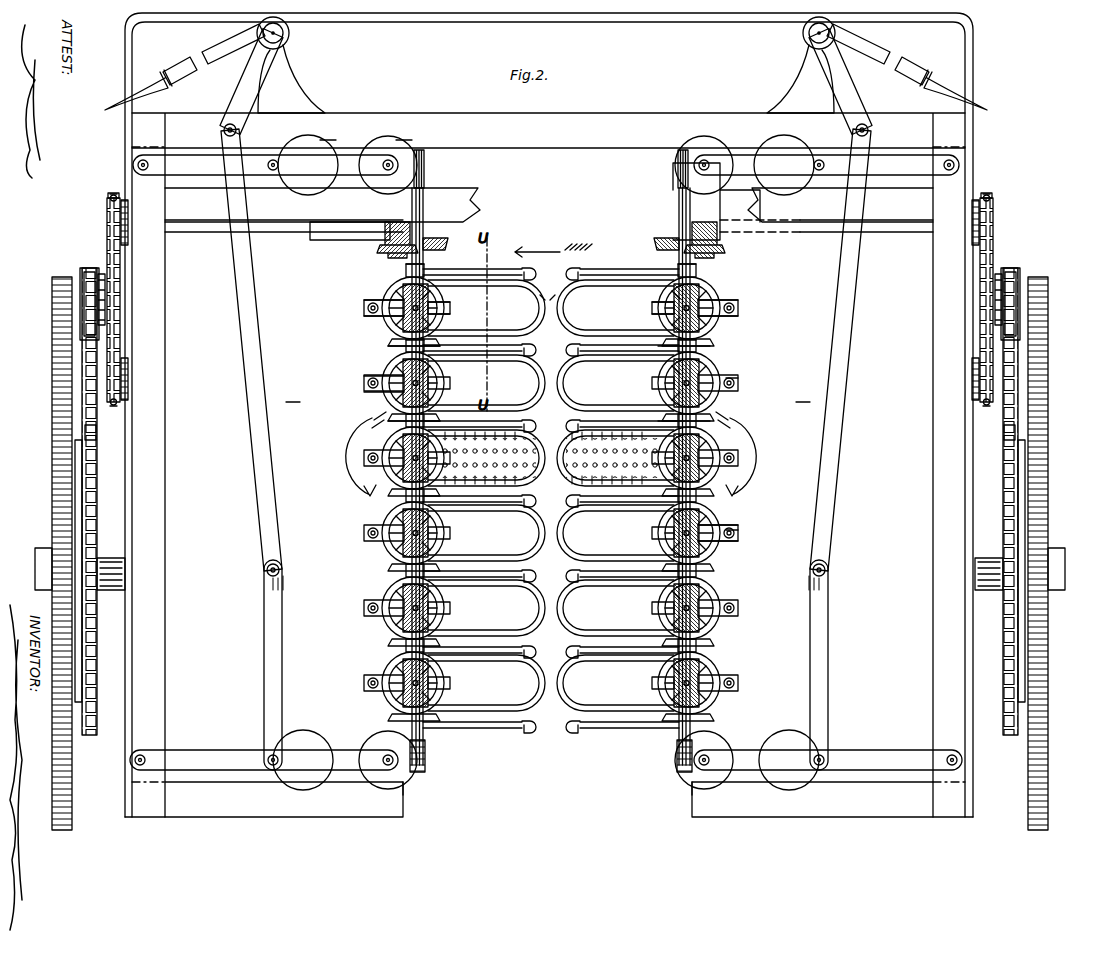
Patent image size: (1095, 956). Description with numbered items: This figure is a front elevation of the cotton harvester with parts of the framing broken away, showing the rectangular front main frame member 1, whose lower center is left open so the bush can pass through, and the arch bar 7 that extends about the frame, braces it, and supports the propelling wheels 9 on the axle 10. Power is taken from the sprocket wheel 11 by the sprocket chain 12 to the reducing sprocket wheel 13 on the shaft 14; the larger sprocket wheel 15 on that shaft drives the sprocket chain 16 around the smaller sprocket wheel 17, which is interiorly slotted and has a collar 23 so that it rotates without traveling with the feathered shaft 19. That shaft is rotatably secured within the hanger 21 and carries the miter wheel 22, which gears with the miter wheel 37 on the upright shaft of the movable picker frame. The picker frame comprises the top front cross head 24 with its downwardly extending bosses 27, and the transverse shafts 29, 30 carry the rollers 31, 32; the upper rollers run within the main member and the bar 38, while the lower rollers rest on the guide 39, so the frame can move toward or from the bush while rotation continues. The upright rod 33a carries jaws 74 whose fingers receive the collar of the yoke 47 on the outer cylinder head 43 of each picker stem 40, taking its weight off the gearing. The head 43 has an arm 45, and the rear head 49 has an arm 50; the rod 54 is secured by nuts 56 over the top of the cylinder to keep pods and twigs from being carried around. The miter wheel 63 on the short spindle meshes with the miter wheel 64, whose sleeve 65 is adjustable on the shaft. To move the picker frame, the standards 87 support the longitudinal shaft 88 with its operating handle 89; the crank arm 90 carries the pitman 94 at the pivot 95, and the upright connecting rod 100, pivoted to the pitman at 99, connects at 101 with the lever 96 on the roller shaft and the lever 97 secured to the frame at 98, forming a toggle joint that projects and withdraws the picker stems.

The front main frame member 1 is at (549, 419).
The arch bar 7 is at (440, 24).
The propelling wheels 9 is at (50, 500).
The axle 10 is at (110, 592).
The sprocket wheel 11 is at (98, 468).
The sprocket chain 12 is at (82, 408).
The reducing sprocket wheel 13 is at (80, 270).
The shaft 14 is at (100, 272).
The larger sprocket wheel 15 is at (128, 370).
The sprocket chain 16 is at (122, 283).
The smaller sprocket wheel 17 is at (107, 194).
The feathered shaft 19 is at (198, 222).
The hanger 21 is at (342, 240).
The miter wheel 22 is at (384, 240).
The collar 23 is at (128, 232).
The top front cross head 24 is at (740, 150).
The bosses 27 is at (426, 172).
The transverse shaft 29 is at (402, 150).
The transverse shaft 30 is at (396, 764).
The roller 31 is at (320, 148).
The roller 32 is at (310, 740).
The upright rod 33a is at (415, 232).
The miter wheel 37 is at (440, 248).
The bar 38 is at (549, 205).
The guide 39 is at (404, 795).
The picker stems 40 is at (551, 495).
The outer cylinder head 43 is at (448, 300).
The arm 45 is at (368, 314).
The yoke 47 is at (446, 322).
The rear head 49 is at (545, 292).
The arm 50 is at (585, 268).
The rod 54 is at (455, 276).
The nuts 56 is at (736, 384).
The miter wheel 63 is at (396, 292).
The miter wheel 64 is at (390, 342).
The sleeve 65 is at (712, 338).
The jaws 74 is at (368, 384).
The standards 87 is at (297, 86).
The longitudinal shaft 88 is at (290, 34).
The operating handle 89 is at (215, 55).
The crank arm 90 is at (546, 102).
The pitman 94 is at (240, 345).
The pivot 95 is at (222, 130).
The lever 96 is at (340, 146).
The lever 97 is at (196, 176).
The pivot 98 is at (137, 165).
The pivot 99 is at (265, 574).
The upright connecting rod 100 is at (548, 392).
The pivot 101 is at (274, 158).